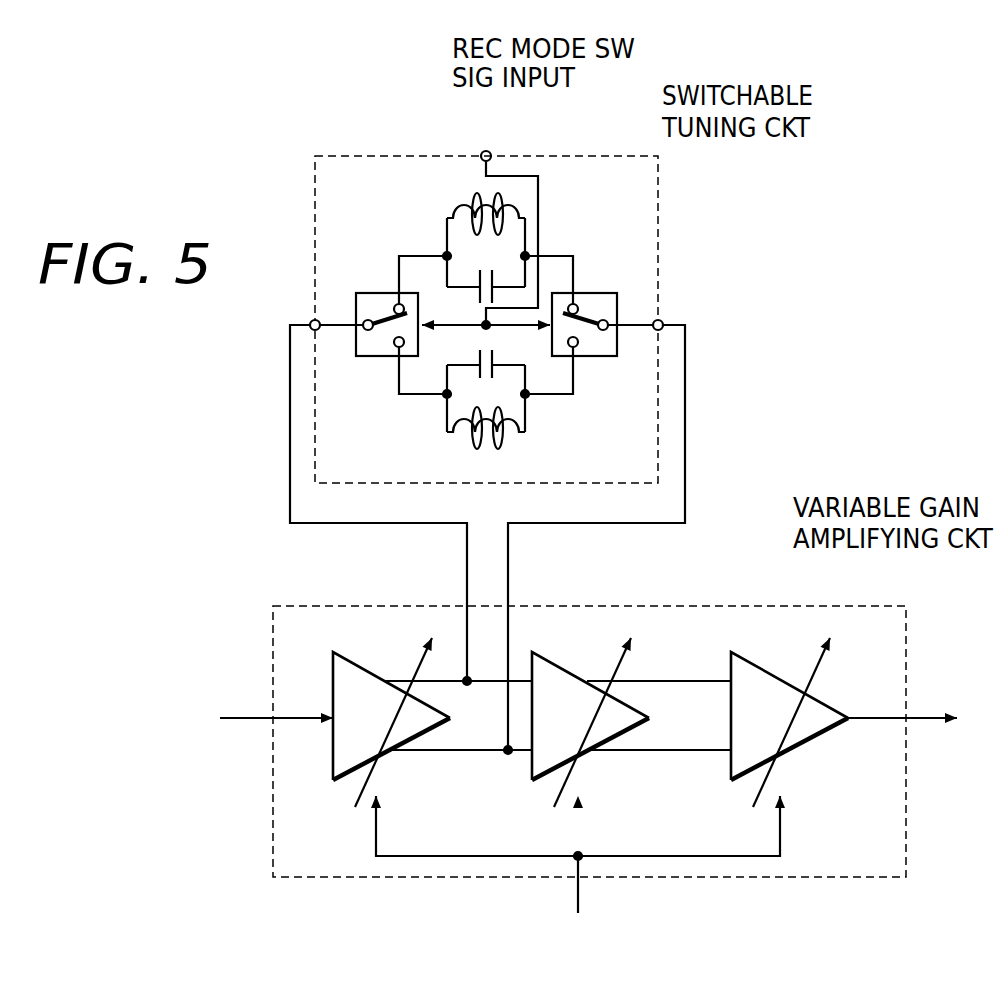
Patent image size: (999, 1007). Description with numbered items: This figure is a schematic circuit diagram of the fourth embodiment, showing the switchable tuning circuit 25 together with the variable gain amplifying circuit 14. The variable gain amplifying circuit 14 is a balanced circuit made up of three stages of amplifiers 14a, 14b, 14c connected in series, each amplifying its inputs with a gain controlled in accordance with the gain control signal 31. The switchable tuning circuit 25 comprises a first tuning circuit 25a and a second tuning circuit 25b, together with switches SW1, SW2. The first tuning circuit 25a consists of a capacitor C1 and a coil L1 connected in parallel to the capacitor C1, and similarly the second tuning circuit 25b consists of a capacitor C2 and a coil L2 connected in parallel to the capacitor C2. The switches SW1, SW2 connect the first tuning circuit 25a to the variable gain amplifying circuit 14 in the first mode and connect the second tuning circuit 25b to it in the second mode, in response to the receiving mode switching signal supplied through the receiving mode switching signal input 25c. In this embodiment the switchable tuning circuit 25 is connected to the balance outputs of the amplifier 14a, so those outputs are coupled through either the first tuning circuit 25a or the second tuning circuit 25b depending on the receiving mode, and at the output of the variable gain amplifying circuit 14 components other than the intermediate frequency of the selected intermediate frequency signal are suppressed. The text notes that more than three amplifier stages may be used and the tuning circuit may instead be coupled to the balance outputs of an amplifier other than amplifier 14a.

The switchable tuning circuit 25 is at (658, 202).
The first tuning circuit 25a is at (517, 243).
The second tuning circuit 25b is at (528, 406).
The receiving mode switching signal input 25c is at (485, 151).
The coil L1 is at (456, 201).
The coil L2 is at (498, 447).
The capacitor C1 is at (461, 305).
The capacitor C2 is at (478, 363).
The switch SW1 is at (362, 295).
The switch SW2 is at (593, 295).
The variable gain amplifying circuit 14 is at (768, 606).
The amplifier 14a is at (369, 670).
The amplifier 14b is at (572, 670).
The amplifier 14c is at (770, 670).
The gain control signal 31 is at (580, 895).